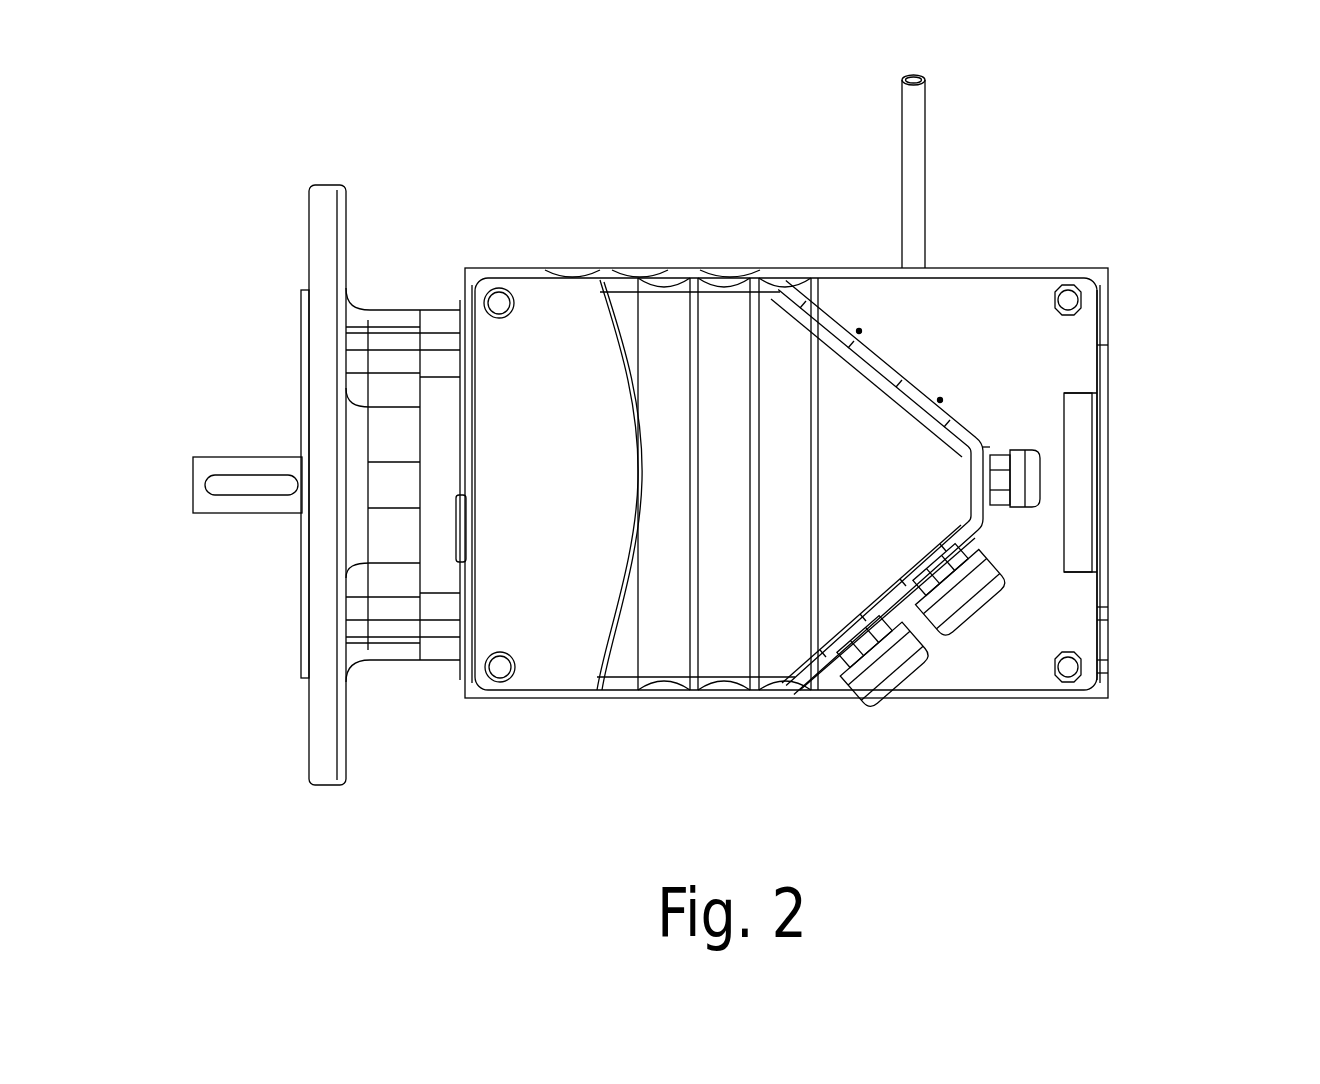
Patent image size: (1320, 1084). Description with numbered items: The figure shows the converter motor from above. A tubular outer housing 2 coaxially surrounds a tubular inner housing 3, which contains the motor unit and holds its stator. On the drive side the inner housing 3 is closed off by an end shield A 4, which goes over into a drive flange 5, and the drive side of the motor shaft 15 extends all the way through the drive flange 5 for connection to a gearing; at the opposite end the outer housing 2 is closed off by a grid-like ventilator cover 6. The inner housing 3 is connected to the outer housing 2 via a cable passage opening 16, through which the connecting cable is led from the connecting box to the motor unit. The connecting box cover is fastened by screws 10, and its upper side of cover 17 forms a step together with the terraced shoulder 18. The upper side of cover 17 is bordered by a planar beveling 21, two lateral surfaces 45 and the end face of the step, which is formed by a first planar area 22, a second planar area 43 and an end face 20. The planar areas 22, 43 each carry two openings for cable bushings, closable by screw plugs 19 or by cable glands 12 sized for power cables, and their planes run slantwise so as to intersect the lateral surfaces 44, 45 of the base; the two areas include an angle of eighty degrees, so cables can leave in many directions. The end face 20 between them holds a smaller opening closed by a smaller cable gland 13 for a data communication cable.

The outer housing 2 is at (472, 700).
The inner housing 3 is at (440, 650).
The end shield A 4 is at (375, 627).
The drive flange 5 is at (322, 722).
The ventilator cover 6 is at (1093, 673).
The screws 10 is at (499, 303).
The cable glands 12 is at (905, 680).
The cable gland 13 is at (993, 481).
The motor shaft 15 is at (246, 465).
The cable passage opening 16 is at (455, 530).
The upper side of cover 17 is at (790, 460).
The shoulder 18 is at (1018, 362).
The screw plugs 19 is at (859, 330).
The end face 20 is at (997, 446).
The beveling 21 is at (541, 566).
The first planar area 22 is at (897, 365).
The second planar area 43 is at (820, 682).
The lateral surface 44 is at (1112, 527).
The lateral surfaces 45 is at (735, 266).